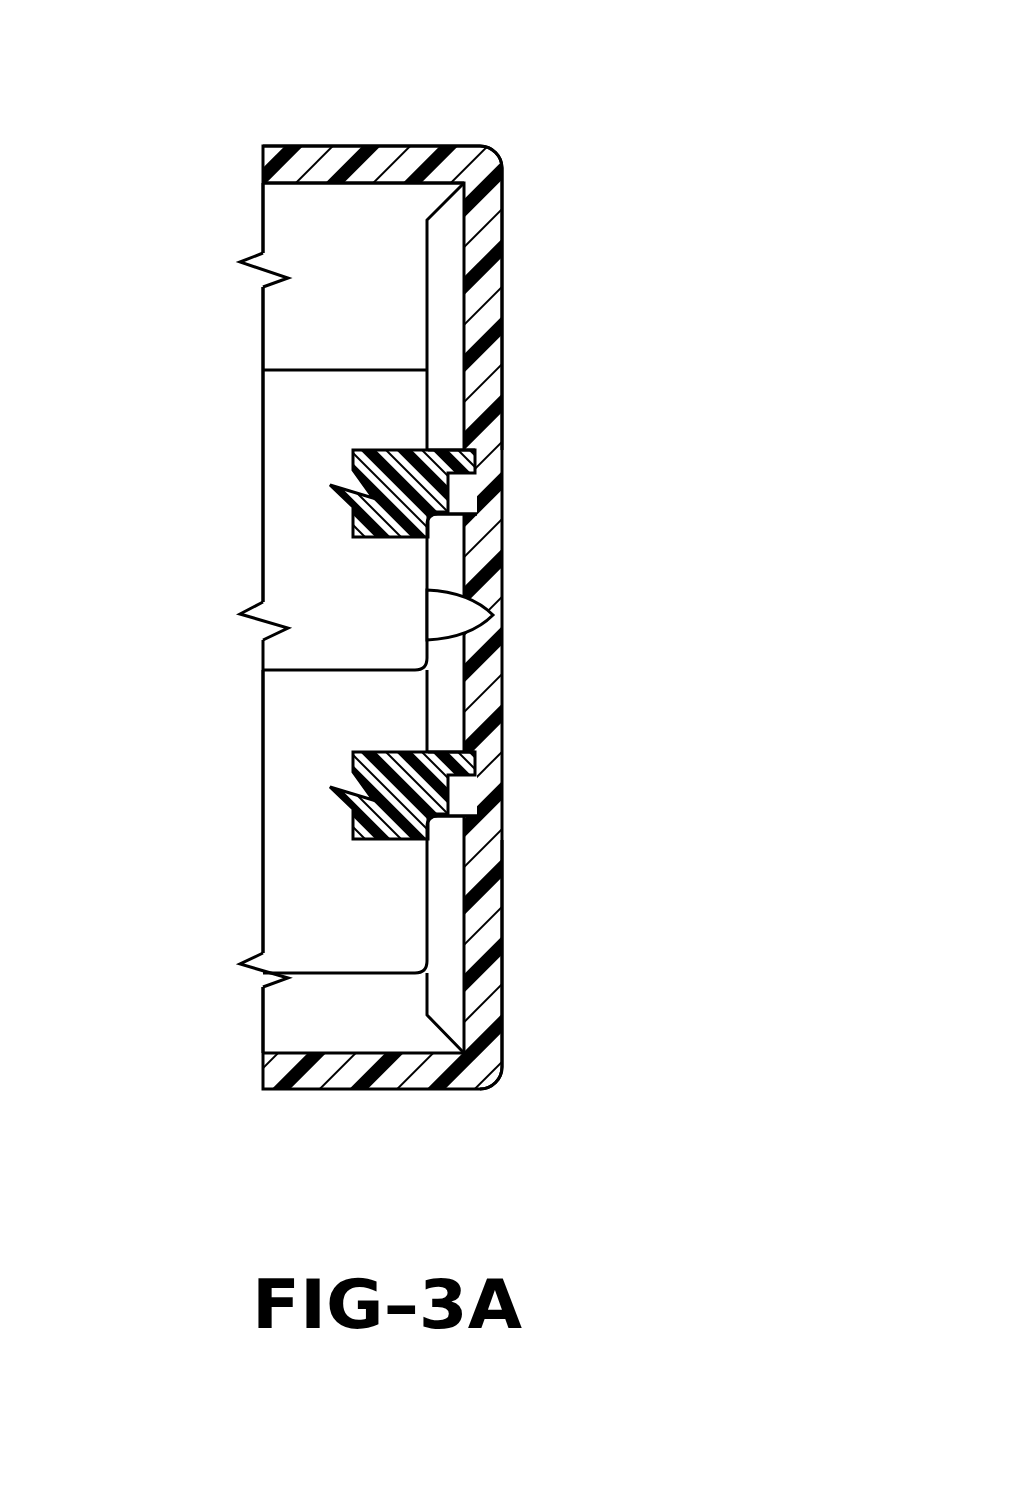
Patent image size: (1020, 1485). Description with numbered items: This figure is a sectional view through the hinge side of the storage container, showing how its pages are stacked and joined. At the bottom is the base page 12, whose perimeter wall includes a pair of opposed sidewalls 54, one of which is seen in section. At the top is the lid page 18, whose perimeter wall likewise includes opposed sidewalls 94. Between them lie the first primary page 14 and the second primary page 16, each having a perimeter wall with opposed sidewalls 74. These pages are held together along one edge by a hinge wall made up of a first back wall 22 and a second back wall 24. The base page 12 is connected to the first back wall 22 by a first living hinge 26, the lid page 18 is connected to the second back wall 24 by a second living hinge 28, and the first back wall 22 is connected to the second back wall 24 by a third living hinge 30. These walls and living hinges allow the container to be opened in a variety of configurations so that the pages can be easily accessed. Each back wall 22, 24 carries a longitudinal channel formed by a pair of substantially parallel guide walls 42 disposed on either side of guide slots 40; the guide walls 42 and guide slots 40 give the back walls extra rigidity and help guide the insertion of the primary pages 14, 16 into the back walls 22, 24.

The base page 12 is at (328, 1100).
The first primary page 14 is at (340, 762).
The second primary page 16 is at (340, 460).
The lid page 18 is at (343, 130).
The first back wall 22 is at (490, 930).
The second back wall 24 is at (490, 295).
The first living hinge 26 is at (478, 1080).
The second living hinge 28 is at (478, 170).
The third living hinge 30 is at (500, 618).
The guide slot 40 is at (466, 494).
The guide wall 42 is at (437, 450).
The sidewall 54 is at (292, 1020).
The sidewall 74 is at (292, 540).
The sidewall 94 is at (292, 228).